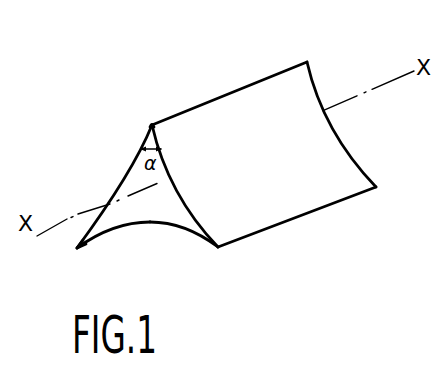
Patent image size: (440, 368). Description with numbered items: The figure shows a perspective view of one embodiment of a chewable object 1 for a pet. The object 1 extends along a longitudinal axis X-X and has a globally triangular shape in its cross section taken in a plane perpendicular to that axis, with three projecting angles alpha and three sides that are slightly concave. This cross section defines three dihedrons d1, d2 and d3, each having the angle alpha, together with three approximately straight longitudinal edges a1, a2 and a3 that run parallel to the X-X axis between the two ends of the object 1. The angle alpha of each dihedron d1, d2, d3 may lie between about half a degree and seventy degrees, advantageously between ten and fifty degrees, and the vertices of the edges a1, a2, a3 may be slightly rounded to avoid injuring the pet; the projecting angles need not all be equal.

The object to be chewed 1 is at (205, 148).
The longitudinal edge a1 is at (183, 110).
The longitudinal edge a2 is at (75, 250).
The longitudinal edge a3 is at (302, 215).
The dihedron d1 is at (128, 165).
The dihedron d2 is at (120, 242).
The dihedron d3 is at (187, 245).